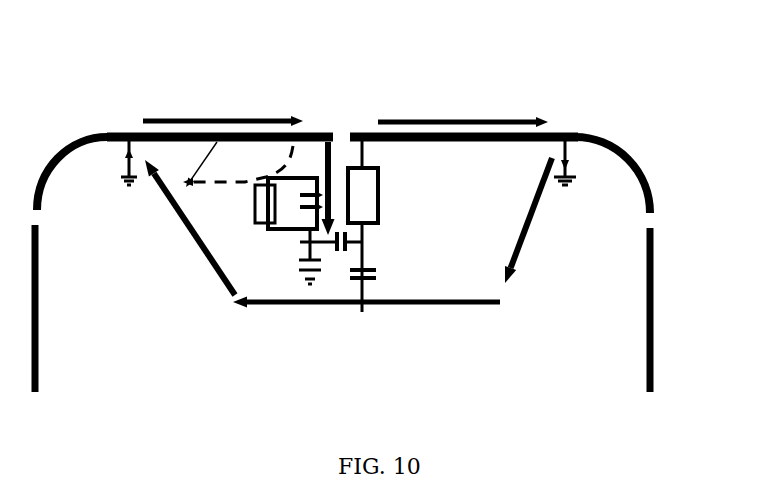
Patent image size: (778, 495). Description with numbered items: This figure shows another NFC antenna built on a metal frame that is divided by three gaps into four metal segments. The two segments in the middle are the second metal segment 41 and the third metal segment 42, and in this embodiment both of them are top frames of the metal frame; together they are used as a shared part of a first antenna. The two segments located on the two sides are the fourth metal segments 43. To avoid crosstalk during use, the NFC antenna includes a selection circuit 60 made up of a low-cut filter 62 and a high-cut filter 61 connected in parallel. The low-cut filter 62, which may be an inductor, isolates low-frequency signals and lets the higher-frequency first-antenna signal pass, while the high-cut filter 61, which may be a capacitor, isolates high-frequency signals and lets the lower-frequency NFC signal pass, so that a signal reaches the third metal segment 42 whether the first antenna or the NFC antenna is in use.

The second metal segment 41 is at (107, 137).
The third metal segment 42 is at (583, 142).
The fourth metal segments 43 is at (38, 315).
The selection circuit 60 is at (269, 169).
The high-cut filter 61 is at (258, 216).
The low-cut filter 62 is at (312, 206).